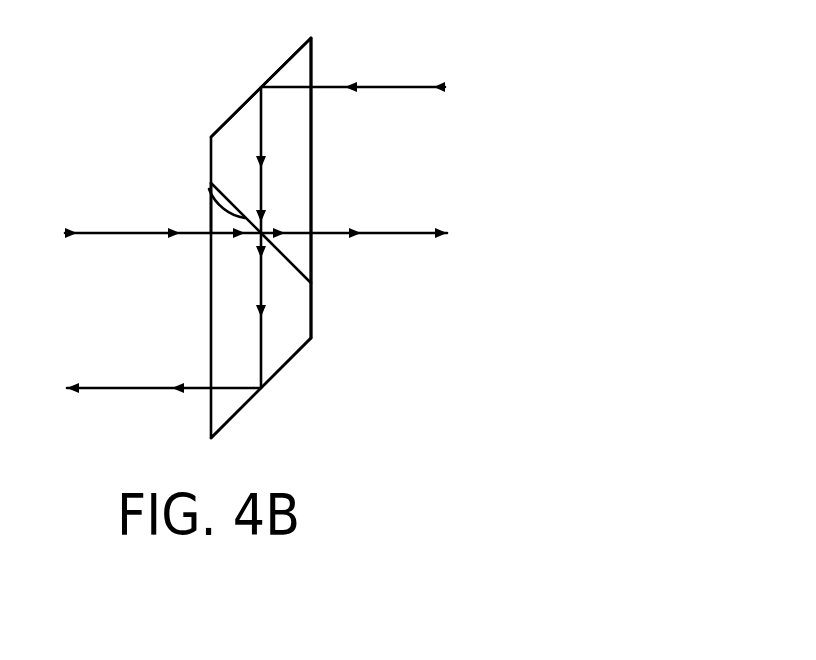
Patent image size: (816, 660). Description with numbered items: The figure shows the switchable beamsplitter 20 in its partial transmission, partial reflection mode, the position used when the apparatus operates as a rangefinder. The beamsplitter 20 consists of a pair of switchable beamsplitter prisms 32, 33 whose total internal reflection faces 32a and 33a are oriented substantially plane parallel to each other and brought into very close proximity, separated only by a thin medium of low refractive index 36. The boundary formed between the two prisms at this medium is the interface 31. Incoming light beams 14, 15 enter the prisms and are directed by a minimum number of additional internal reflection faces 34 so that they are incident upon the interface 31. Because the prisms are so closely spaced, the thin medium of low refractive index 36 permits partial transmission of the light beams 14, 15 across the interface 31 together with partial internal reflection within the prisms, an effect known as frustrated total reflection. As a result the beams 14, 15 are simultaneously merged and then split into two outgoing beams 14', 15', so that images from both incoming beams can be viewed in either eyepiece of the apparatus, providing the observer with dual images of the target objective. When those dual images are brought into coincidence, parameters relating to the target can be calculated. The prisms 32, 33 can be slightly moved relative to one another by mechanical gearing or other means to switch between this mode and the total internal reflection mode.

The light beam 14 is at (163, 200).
The split output beam 14' is at (164, 346).
The light beam 15 is at (350, 201).
The split output beam 15' is at (361, 268).
The switchable beamsplitter 20 is at (252, 222).
The interface 31 is at (209, 190).
The switchable beamsplitter prism 32 is at (287, 117).
The total internal reflection face 32a is at (248, 208).
The switchable beamsplitter prism 33 is at (297, 305).
The total internal reflection face 33a is at (280, 253).
The internal reflection face 34 is at (283, 52).
The medium of low refractive index 36 is at (211, 210).